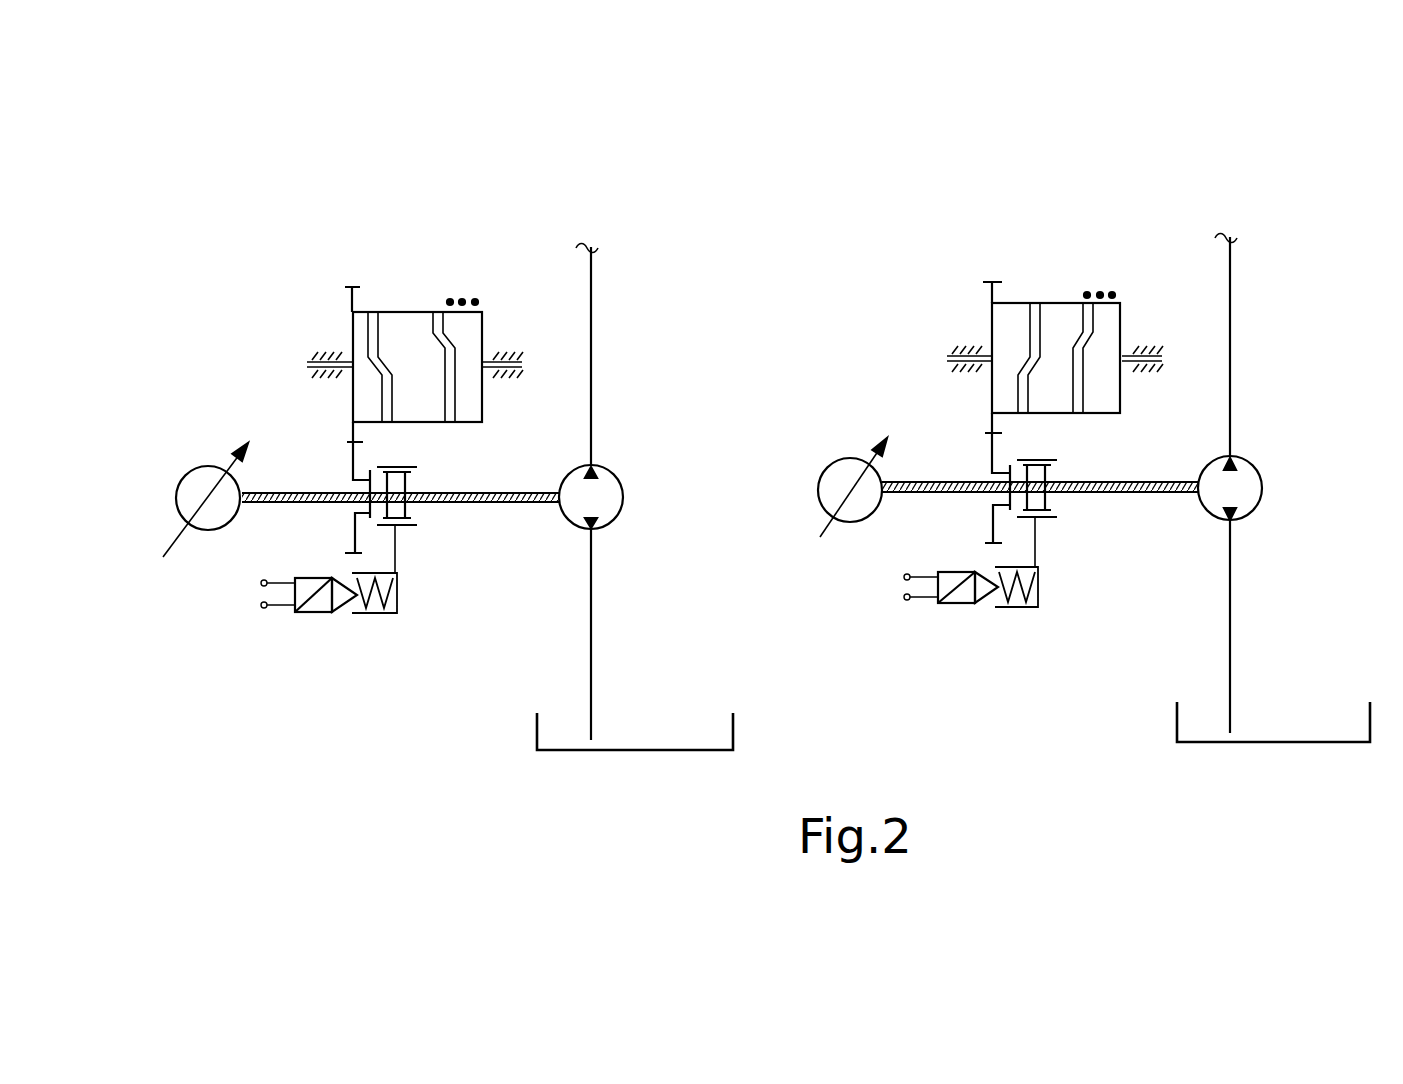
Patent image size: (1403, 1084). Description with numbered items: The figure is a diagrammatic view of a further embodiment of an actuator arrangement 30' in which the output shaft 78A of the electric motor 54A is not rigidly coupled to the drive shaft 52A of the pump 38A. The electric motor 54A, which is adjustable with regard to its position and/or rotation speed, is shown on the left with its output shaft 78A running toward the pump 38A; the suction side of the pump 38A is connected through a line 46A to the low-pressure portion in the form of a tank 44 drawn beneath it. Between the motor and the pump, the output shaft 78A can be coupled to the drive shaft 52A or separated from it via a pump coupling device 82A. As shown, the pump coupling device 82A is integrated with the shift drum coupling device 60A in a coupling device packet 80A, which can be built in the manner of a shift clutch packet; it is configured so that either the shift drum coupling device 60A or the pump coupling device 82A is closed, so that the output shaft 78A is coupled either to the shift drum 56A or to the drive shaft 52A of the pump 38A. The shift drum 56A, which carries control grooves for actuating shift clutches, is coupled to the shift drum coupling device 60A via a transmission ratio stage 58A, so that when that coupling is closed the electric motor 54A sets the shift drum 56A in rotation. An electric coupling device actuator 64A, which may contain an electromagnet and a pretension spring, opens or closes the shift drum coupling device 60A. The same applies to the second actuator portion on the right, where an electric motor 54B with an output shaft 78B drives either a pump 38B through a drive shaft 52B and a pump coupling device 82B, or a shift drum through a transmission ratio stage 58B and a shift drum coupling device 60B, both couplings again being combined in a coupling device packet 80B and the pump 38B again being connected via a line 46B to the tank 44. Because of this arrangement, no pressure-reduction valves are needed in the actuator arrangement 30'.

The actuator arrangement 30' is at (1095, 446).
The pump 38A is at (615, 478).
The hydraulic pump 38B is at (1248, 477).
The tank 44 is at (637, 752).
The hydraulic line 46A is at (588, 357).
The hydraulic line 46B is at (1228, 302).
The drive shaft 52A is at (482, 502).
The shaft 52B is at (1145, 481).
The electric motor 54A is at (195, 463).
The electric motor 54B is at (852, 523).
The shift drum 56A is at (353, 332).
The transmission ratio stage 58A is at (353, 453).
The shift shaft 58B is at (988, 297).
The shift drum coupling device 60A is at (355, 523).
The bearing support 60B is at (993, 513).
The electric coupling device actuator 64A is at (353, 628).
The output shaft 78A is at (267, 492).
The motor shaft 78B is at (913, 483).
The coupling device packet 80A is at (410, 570).
The actuating line 80B is at (1052, 553).
The pump coupling device 82A is at (413, 487).
The clutch 82B is at (1053, 500).